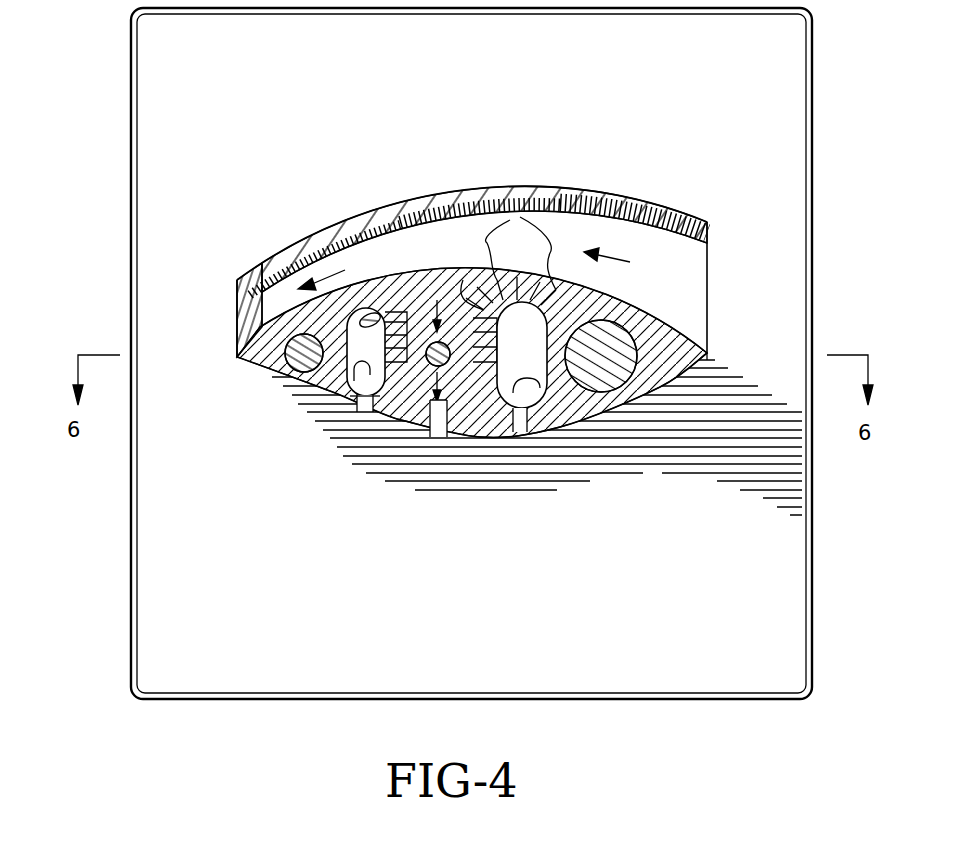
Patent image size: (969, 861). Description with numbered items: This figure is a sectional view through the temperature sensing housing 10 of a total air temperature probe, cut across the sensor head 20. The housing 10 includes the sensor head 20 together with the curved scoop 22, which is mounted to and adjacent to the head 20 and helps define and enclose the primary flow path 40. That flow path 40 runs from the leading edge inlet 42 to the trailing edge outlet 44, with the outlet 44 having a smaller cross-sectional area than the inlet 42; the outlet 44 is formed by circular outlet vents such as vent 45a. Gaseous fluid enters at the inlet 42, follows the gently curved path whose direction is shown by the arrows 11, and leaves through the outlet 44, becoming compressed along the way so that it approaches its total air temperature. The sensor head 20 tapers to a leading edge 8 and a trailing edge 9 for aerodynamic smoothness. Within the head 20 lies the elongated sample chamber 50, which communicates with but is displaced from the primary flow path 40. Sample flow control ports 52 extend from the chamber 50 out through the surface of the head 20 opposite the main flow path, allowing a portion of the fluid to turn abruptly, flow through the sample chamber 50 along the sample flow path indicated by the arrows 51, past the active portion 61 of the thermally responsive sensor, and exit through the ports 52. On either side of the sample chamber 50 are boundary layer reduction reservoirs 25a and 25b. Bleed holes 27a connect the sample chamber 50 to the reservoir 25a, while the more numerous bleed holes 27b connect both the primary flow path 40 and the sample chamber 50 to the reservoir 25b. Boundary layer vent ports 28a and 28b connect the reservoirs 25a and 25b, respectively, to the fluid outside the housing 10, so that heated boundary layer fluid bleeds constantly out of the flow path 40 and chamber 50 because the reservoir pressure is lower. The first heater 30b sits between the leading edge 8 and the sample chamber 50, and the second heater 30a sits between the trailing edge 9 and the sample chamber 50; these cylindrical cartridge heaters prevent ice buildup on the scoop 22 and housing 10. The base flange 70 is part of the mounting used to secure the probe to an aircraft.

The leading edge 8 is at (712, 356).
The trailing edge 9 is at (285, 354).
The temperature sensing housing 10 is at (278, 230).
The arrows 11 is at (328, 270).
The sensor head 20 is at (275, 397).
The curved scoop 22 is at (664, 202).
The boundary layer reduction reservoir 25a is at (357, 382).
The boundary layer reduction reservoir 25b is at (522, 392).
The boundary layer bleed holes 27a is at (366, 314).
The boundary layer bleed holes 27b is at (463, 280).
The boundary layer vent port 28a is at (352, 400).
The boundary layer vent port 28b is at (521, 430).
The second heater 30a is at (353, 373).
The first heater 30b is at (610, 384).
The primary flow path 40 is at (581, 226).
The leading edge inlet 42 is at (692, 280).
The trailing edge outlet 44 is at (260, 300).
The outlet vent 45a is at (243, 328).
The sample chamber 50 is at (492, 497).
The arrows 51 is at (437, 300).
The sample flow control ports 52 is at (440, 432).
The active portion 61 is at (364, 414).
The base flange 70 is at (165, 473).